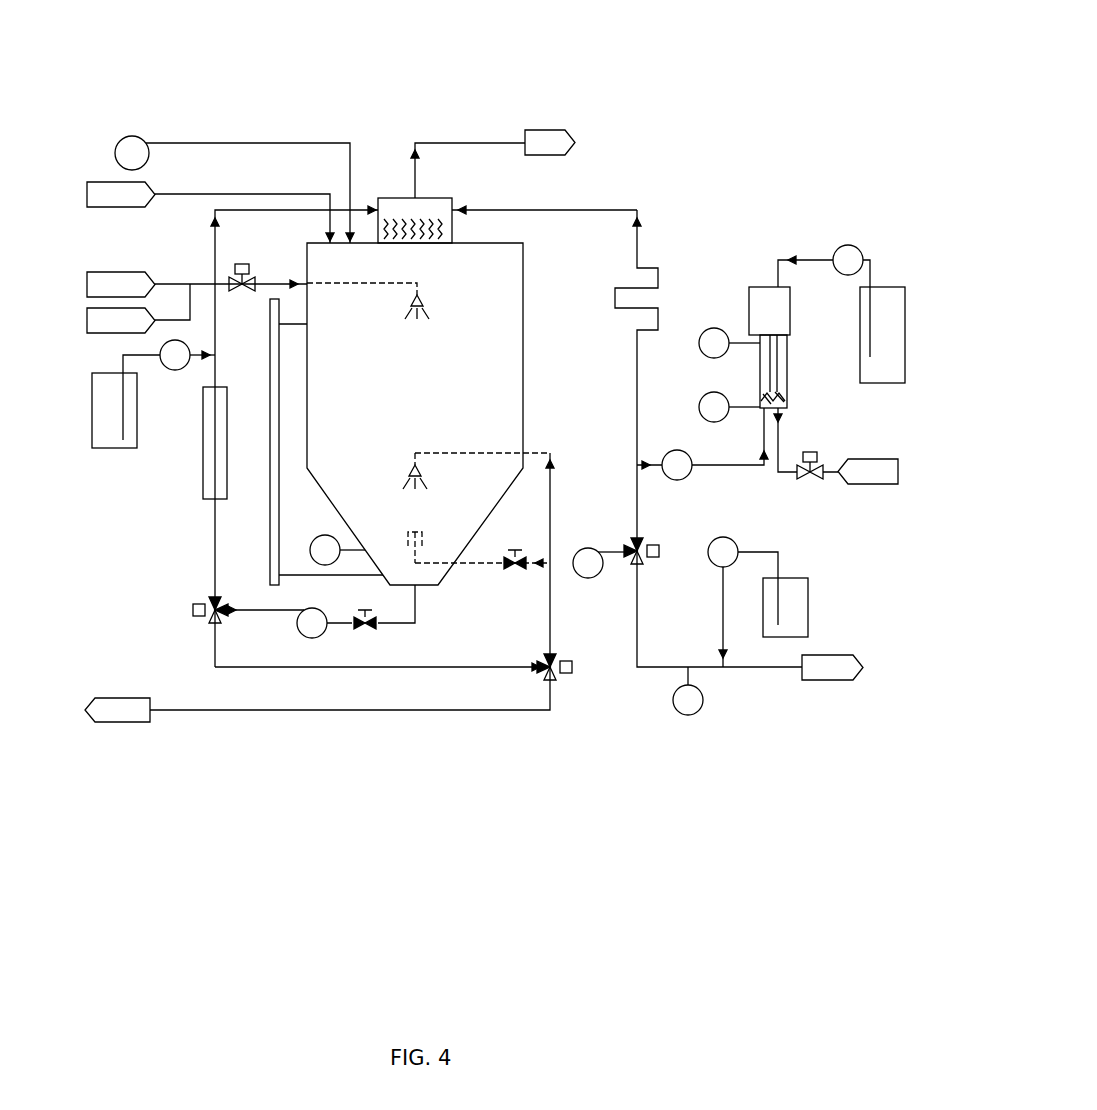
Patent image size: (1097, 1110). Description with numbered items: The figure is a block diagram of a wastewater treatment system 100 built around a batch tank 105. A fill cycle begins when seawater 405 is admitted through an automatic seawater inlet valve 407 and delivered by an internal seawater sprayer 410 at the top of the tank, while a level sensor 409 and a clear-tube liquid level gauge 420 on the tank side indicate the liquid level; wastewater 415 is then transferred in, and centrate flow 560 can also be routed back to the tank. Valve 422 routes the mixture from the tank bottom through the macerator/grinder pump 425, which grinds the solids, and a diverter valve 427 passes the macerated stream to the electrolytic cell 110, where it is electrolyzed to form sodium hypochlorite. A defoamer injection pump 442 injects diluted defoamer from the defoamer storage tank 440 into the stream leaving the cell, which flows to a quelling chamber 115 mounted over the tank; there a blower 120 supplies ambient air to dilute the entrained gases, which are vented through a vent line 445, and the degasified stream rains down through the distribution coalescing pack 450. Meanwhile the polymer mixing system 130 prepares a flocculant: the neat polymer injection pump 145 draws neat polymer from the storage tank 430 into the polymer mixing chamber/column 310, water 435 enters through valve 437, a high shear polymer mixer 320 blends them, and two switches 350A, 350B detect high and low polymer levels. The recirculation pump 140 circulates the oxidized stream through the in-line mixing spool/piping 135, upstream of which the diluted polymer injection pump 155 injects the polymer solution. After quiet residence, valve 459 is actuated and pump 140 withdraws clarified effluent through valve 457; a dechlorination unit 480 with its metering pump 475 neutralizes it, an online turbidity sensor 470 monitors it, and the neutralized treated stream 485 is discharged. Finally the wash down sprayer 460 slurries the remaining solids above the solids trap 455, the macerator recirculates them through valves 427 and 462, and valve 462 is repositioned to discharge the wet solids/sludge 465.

The system 100 is at (838, 85).
The batch tank 105 is at (415, 414).
The electrolytic cell 110 is at (193, 443).
The quelling chamber 115 is at (422, 207).
The blower 120 is at (233, 177).
The polymer mixing system 130 is at (794, 295).
The in-line mixing spool/piping 135 is at (696, 438).
The recirculation pump 140 is at (595, 552).
The neat polymer injection pump 145 is at (850, 287).
The diluted polymer injection pump 155 is at (702, 444).
The polymer mixing chamber/column 310 is at (795, 371).
The high shear polymer mixer 320 is at (787, 398).
The switch 350A is at (725, 332).
The switch 350B is at (724, 396).
The seawater 405 is at (197, 270).
The automatic seawater inlet valve 407 is at (249, 264).
The level sensor 409 is at (327, 538).
The seawater sprayer 410 is at (389, 301).
The wastewater 415 is at (210, 212).
The liquid level gauge 420 is at (305, 442).
The valve 422 is at (368, 630).
The macerator/grinder pump 425 is at (307, 611).
The diverter valve 427 is at (193, 610).
The neat polymer storage tank 430 is at (905, 335).
The potable or non-potable water 435 is at (868, 484).
The valve 437 is at (812, 476).
The defoamer storage tank 440 is at (103, 401).
The defoamer injection pump 442 is at (186, 369).
The vent line 445 is at (550, 128).
The distribution coalescing pack 450 is at (452, 228).
The solids trap 455 is at (473, 539).
The valve 457 is at (518, 576).
The effluent discharge valve 459 is at (658, 541).
The wash down sprayer 460 is at (459, 470).
The discharge valve 462 is at (570, 678).
The wet solids/sludge 465 is at (117, 698).
The online turbidity sensor 470 is at (703, 701).
The metering pump 475 is at (743, 592).
The dechlorination unit 480 is at (808, 607).
The neutralized treated stream 485 is at (832, 682).
The centrate flow 560 is at (127, 323).